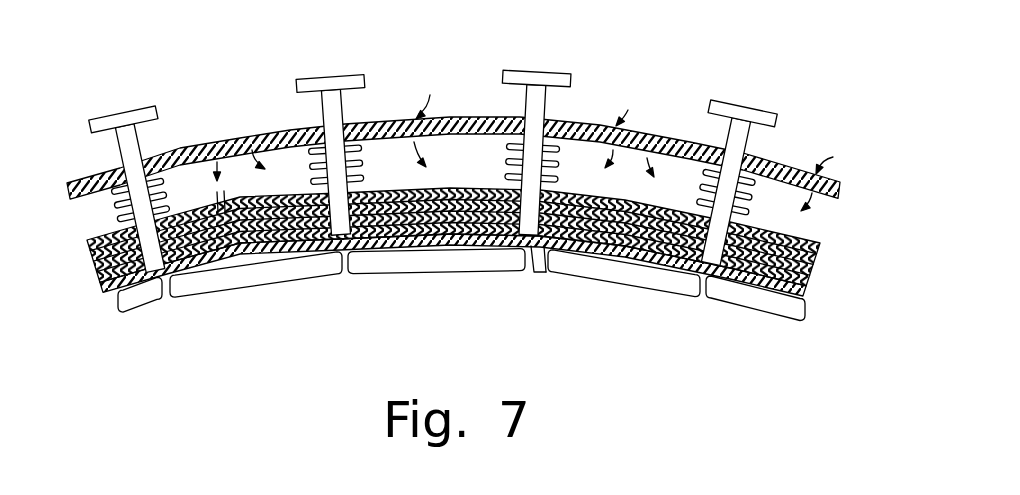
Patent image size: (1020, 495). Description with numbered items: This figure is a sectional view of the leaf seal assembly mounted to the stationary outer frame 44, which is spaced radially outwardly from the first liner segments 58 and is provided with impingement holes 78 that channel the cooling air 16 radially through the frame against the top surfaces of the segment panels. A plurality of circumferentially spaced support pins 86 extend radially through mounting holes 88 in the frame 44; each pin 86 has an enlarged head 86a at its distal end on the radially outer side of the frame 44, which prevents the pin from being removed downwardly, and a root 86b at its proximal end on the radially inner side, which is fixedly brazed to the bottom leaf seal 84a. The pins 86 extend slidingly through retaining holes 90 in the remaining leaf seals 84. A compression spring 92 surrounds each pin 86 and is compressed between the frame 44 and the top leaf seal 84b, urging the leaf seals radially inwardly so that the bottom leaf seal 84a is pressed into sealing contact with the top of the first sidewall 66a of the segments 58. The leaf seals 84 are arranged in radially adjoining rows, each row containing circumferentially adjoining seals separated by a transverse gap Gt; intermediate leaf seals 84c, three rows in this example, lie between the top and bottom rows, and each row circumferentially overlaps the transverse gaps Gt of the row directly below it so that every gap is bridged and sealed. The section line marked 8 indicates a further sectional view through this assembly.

The cooling air 16 is at (453, 136).
The impingement holes 78 is at (490, 117).
The outer frame 44 is at (833, 175).
The section line 8- 8 is at (328, 62).
The mounting holes 88 is at (346, 113).
The support pins 86 is at (544, 172).
The enlarged head 86a is at (537, 72).
The root 86b is at (533, 275).
The retaining holes 90 is at (546, 274).
The compression springs 92 is at (746, 199).
The leaf seals 84 is at (464, 266).
The bottom leaf seal 84a is at (800, 306).
The top leaf seal 84b is at (826, 246).
The intermediate leaf seals 84c is at (818, 258).
The first liner segments 58 is at (436, 285).
The first sidewall 66a is at (462, 257).
The transverse gap Gt is at (193, 199).